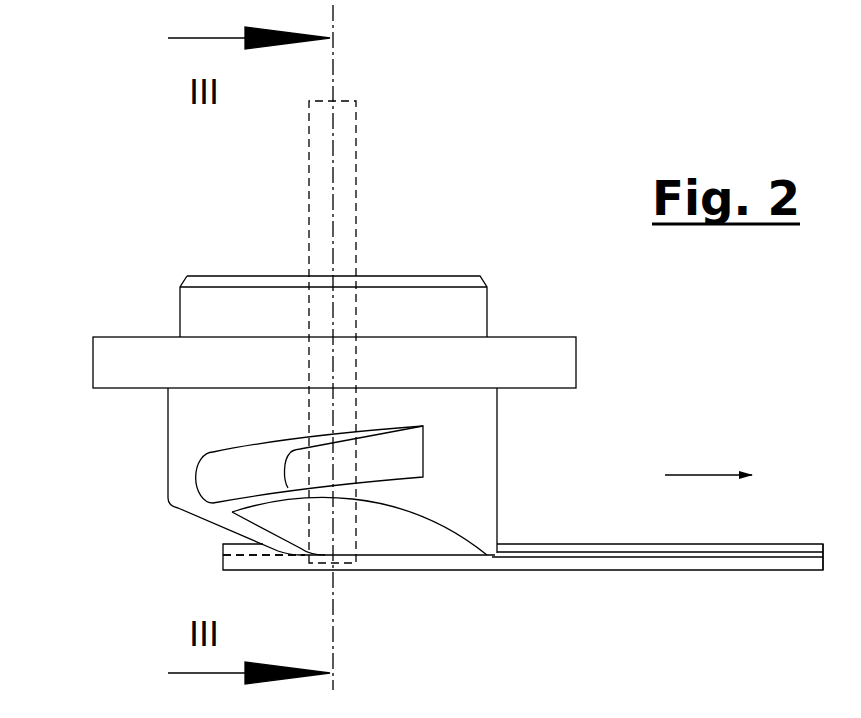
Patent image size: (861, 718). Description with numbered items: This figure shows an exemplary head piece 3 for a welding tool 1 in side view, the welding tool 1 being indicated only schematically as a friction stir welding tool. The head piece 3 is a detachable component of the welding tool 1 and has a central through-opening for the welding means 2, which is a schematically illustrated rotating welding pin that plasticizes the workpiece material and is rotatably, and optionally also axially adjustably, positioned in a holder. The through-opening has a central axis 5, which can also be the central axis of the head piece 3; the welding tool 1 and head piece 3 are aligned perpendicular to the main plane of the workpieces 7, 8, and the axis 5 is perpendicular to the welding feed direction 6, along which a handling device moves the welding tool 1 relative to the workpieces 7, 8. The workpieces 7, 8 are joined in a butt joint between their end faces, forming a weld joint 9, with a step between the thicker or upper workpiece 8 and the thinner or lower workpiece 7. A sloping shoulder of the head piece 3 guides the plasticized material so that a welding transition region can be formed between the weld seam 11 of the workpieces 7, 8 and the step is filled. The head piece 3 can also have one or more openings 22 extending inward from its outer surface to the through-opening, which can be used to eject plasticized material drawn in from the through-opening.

The welding tool 1 is at (208, 260).
The welding means 2 is at (345, 203).
The head piece 3 is at (535, 353).
The central axis 5 is at (333, 145).
The welding feed direction 6 is at (710, 470).
The workpiece 7 is at (645, 563).
The workpiece 8 is at (607, 548).
The weld joint 9 is at (797, 545).
The weld seam 11 is at (220, 555).
The opening 22 is at (247, 473).